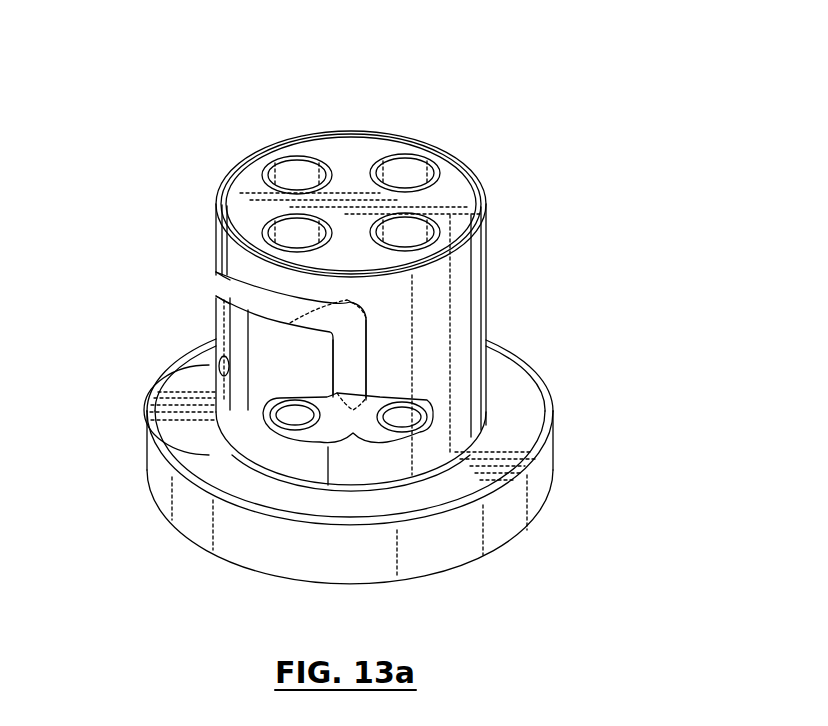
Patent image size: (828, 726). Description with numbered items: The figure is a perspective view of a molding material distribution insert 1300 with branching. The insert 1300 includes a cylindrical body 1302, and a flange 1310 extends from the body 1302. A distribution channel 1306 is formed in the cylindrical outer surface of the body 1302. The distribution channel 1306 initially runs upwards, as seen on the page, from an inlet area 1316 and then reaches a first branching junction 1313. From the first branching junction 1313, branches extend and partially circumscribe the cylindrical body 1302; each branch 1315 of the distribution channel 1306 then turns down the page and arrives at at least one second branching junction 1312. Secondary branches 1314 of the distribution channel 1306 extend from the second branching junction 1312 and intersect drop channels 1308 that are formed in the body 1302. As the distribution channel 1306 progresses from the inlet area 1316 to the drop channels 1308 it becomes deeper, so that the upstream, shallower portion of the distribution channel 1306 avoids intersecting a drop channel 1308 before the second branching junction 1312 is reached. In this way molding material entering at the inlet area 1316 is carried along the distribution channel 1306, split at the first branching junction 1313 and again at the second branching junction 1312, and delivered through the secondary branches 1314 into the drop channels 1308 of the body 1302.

The insert 1300 is at (535, 113).
The cylindrical body 1302 is at (345, 143).
The drop channels 1308 is at (413, 233).
The distribution channel 1306 is at (241, 288).
The first branching junction 1313 is at (218, 263).
The branch 1315 is at (296, 318).
The second branching junction 1312 is at (353, 394).
The secondary branches 1314 is at (413, 413).
The flange 1310 is at (553, 463).
The inlet area 1316 is at (150, 458).